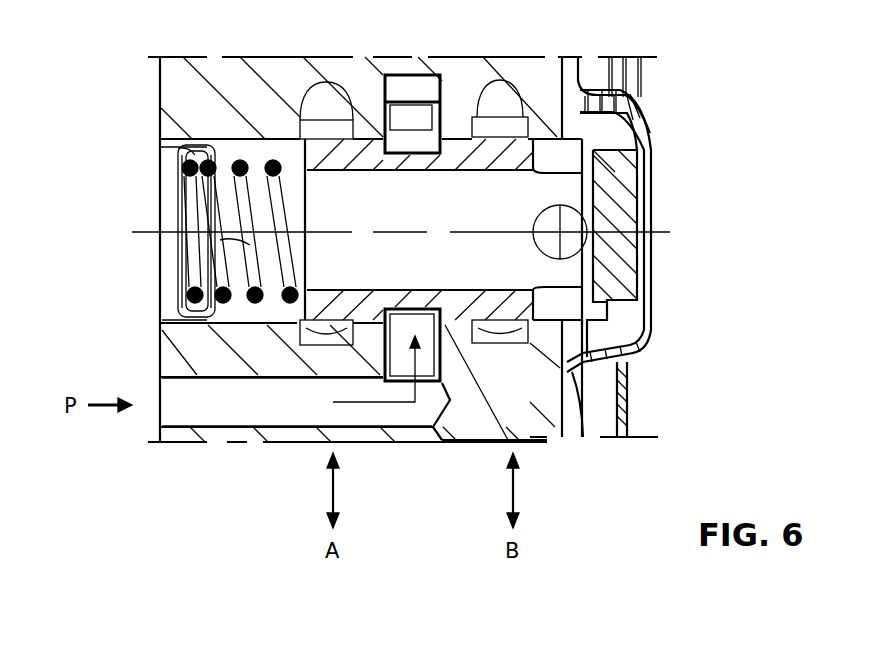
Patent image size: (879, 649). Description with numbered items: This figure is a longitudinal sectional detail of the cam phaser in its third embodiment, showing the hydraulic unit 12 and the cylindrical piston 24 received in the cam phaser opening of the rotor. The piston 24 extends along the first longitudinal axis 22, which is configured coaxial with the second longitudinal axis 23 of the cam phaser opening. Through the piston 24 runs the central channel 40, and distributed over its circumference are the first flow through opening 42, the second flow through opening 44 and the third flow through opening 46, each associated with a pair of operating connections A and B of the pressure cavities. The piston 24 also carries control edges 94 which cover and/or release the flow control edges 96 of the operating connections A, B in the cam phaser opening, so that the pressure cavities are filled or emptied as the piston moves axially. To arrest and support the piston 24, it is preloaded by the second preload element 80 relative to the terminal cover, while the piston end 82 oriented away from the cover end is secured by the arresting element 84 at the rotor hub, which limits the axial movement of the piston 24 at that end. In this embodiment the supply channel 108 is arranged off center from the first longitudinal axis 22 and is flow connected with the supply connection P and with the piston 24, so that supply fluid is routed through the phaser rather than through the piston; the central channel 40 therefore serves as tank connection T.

The hydraulic unit 12 is at (700, 143).
The first longitudinal axis 22 is at (131, 231).
The second longitudinal axis 23 is at (196, 231).
The piston 24 is at (652, 203).
The central channel 40 is at (423, 270).
The first flow through opening 42 is at (550, 153).
The second flow through opening 44 is at (543, 220).
The third flow through opening 46 is at (550, 307).
The second preload element 80 is at (229, 157).
The piston end 82 is at (645, 185).
The arresting element 84 is at (653, 338).
The control edges 94 is at (480, 150).
The flow control edges 96 is at (507, 130).
The supply channel 108 is at (262, 405).